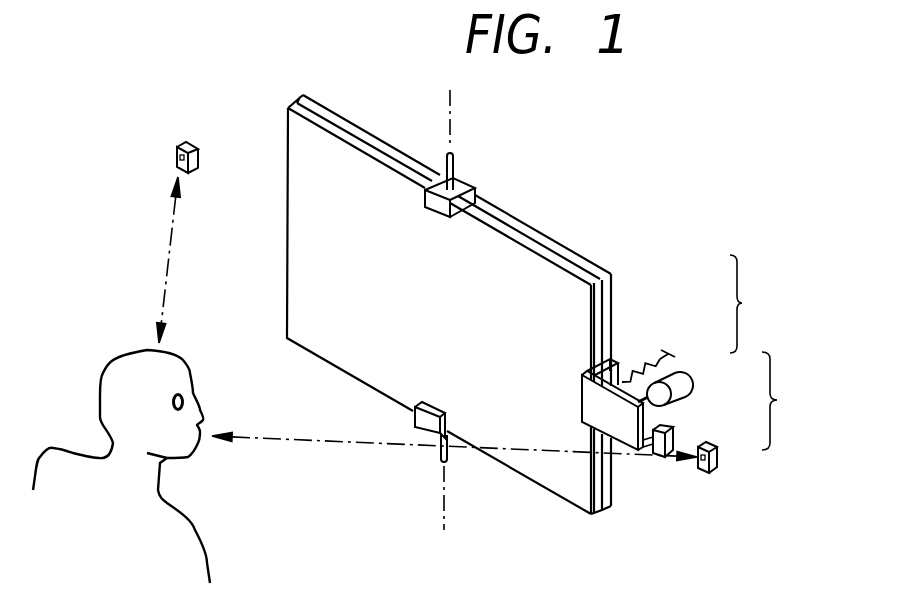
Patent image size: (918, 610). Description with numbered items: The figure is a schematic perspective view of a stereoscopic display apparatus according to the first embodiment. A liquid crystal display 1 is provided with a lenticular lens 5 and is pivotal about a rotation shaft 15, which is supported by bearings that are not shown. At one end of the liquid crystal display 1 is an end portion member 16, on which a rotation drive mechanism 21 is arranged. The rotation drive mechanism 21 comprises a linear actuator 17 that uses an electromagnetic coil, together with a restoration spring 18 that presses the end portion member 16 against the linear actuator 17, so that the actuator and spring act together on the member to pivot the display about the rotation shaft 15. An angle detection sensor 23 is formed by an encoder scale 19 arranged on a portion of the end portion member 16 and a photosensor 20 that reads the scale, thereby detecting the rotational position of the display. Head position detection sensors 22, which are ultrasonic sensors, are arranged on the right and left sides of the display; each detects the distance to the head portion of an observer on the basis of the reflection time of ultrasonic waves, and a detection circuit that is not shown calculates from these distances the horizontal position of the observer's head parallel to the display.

The liquid crystal display 1 is at (302, 100).
The lenticular lens 5 is at (288, 107).
The rotation shaft 15 is at (455, 158).
The end portion member 16 is at (627, 433).
The linear actuator 17 is at (690, 377).
The restoration spring 18 is at (654, 355).
The encoder scale 19 is at (670, 424).
The photosensor 20 is at (675, 437).
The rotation drive mechanism 21 is at (757, 304).
The head position detection sensors 22 is at (181, 145).
The angle detection sensor 23 is at (789, 401).